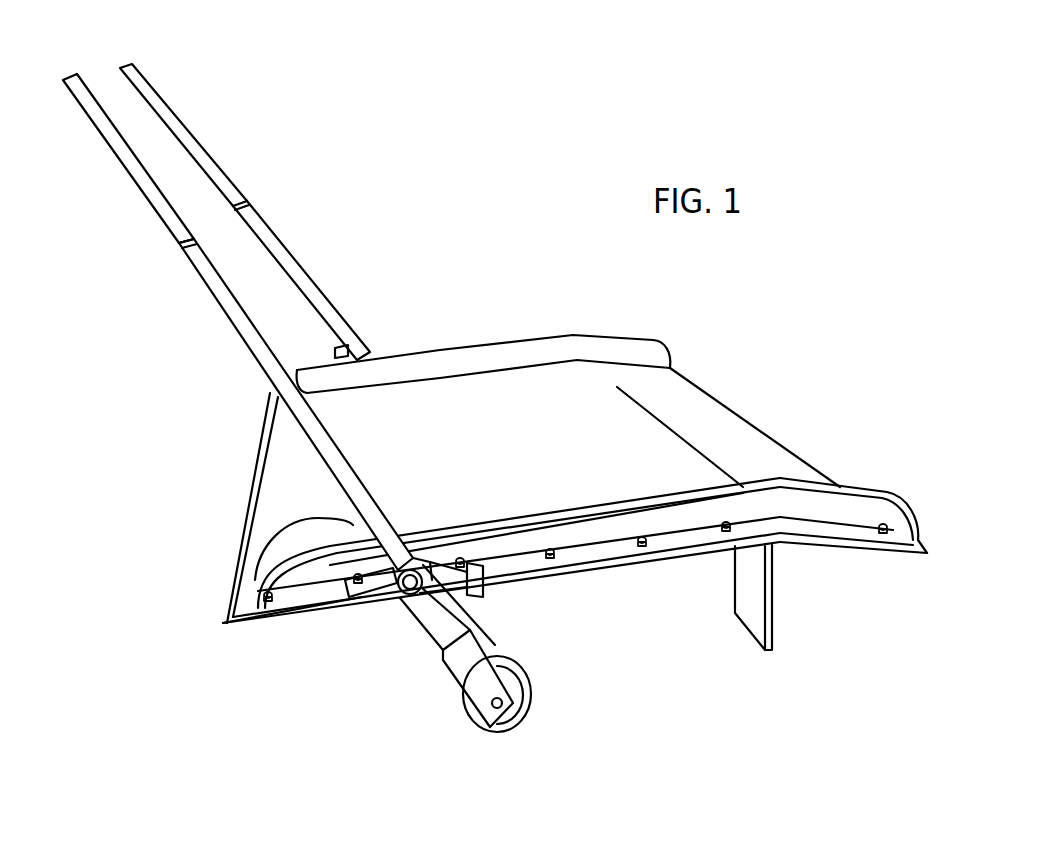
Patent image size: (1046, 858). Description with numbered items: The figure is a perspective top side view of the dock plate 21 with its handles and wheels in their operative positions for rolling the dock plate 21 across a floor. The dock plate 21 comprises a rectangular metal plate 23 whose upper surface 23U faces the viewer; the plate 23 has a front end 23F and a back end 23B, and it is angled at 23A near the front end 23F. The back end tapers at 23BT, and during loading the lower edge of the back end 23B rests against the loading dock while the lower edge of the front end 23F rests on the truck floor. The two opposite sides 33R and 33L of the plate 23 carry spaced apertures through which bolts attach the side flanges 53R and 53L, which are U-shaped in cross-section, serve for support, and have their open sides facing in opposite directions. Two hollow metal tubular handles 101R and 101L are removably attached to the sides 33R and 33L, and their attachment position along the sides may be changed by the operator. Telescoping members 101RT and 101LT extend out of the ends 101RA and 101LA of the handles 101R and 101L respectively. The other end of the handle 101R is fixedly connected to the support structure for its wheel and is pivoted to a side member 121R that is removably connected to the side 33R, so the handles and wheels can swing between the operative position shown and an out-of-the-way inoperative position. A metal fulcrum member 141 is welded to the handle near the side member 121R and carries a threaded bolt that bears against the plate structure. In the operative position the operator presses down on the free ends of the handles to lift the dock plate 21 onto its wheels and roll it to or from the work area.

The dock plate 21 is at (497, 337).
The metal plate 23 is at (540, 407).
The upper surface 23U is at (477, 403).
The angled portion of plate 23A is at (653, 413).
The front end 23F is at (753, 422).
The back end 23B is at (243, 512).
The back end taper 23BT is at (228, 604).
The left side of plate 33L is at (519, 392).
The right side of plate 33R is at (553, 588).
The left side flange 53L is at (652, 340).
The right side flange 53R is at (887, 490).
The left handle 101L is at (297, 263).
The left telescoping member 101LT is at (197, 143).
The end of left handle 101LA is at (243, 207).
The right handle 101R is at (250, 355).
The right telescoping member 101RT is at (152, 202).
The end of right handle 101RA is at (180, 250).
The right side member 121R is at (382, 586).
The curved guard bracket 141 is at (245, 550).